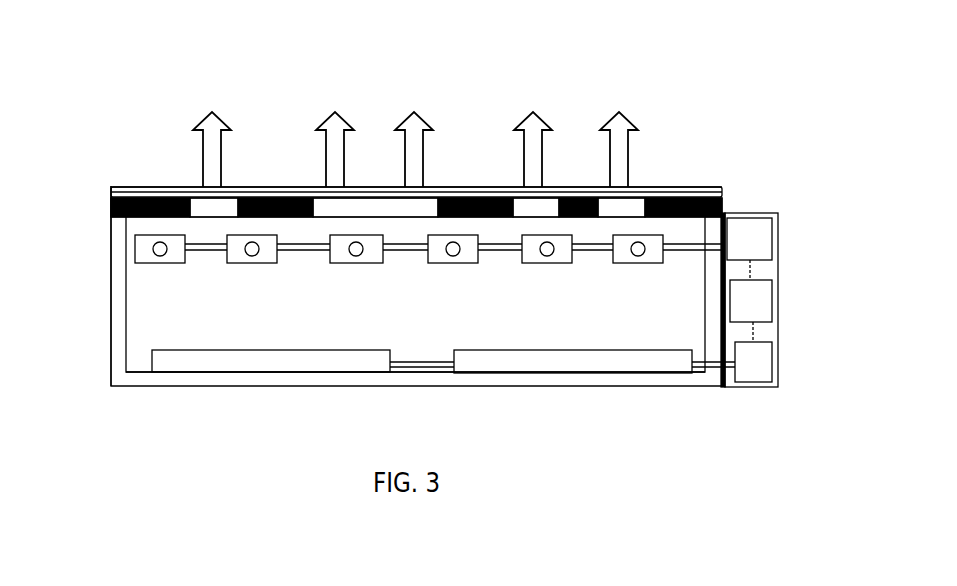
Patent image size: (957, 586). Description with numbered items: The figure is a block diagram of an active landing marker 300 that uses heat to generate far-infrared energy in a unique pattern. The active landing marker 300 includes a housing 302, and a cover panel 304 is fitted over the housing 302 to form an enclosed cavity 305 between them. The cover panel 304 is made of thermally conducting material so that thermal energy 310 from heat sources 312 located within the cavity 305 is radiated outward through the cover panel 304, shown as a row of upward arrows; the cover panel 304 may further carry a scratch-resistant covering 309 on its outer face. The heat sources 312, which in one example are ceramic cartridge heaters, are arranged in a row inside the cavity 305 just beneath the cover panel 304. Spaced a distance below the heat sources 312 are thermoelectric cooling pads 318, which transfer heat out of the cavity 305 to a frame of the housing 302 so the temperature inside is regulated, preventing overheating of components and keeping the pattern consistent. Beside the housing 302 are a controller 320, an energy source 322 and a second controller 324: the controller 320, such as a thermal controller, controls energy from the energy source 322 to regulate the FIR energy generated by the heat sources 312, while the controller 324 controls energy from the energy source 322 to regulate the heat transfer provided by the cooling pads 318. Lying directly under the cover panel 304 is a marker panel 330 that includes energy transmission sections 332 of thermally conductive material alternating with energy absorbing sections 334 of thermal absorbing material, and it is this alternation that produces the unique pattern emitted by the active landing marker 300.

The active landing marker 300 is at (836, 116).
The housing 302 is at (115, 272).
The cover panel 304 is at (122, 188).
The cavity 305 is at (147, 318).
The scratch-resistant covering 309 is at (168, 187).
The thermal energy 310 is at (217, 155).
The heat sources 312 is at (237, 262).
The thermoelectric cooling pads 318 is at (255, 358).
The controller 320 is at (764, 248).
The energy source 322 is at (765, 310).
The controller 324 is at (768, 371).
The marker panel 330 is at (112, 190).
The energy transmission sections 332 is at (527, 208).
The energy absorbing sections 334 is at (575, 197).